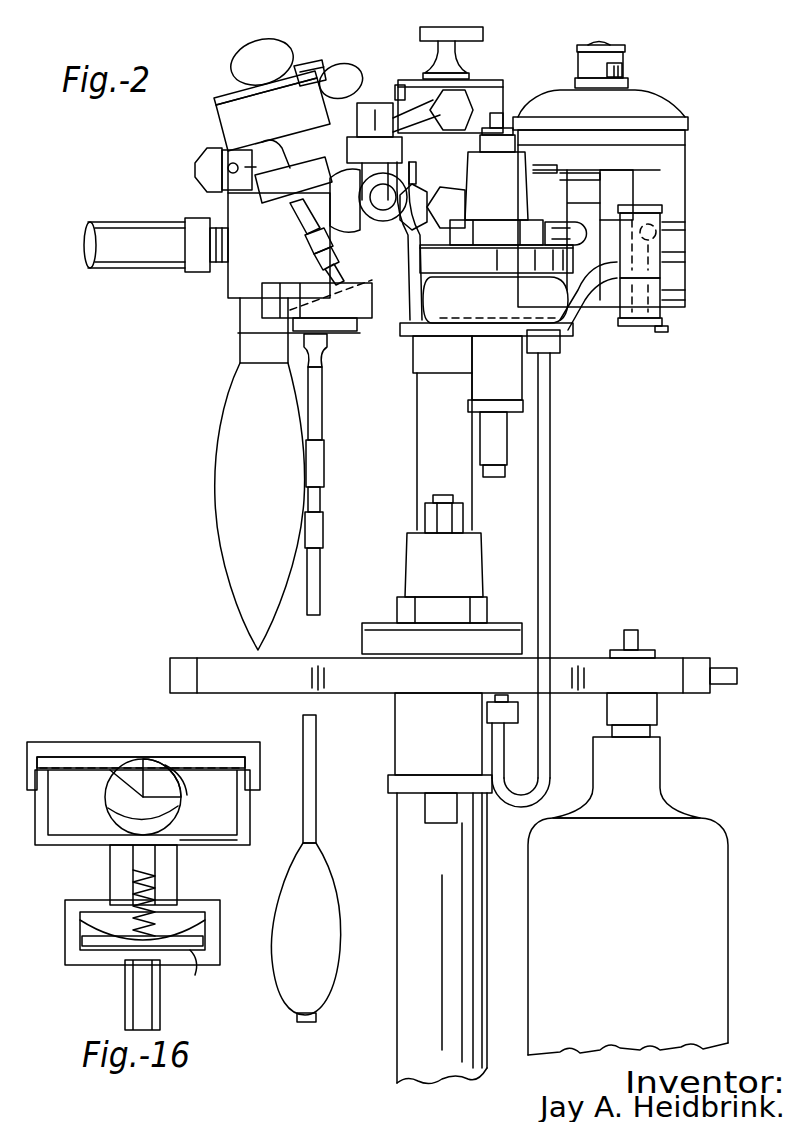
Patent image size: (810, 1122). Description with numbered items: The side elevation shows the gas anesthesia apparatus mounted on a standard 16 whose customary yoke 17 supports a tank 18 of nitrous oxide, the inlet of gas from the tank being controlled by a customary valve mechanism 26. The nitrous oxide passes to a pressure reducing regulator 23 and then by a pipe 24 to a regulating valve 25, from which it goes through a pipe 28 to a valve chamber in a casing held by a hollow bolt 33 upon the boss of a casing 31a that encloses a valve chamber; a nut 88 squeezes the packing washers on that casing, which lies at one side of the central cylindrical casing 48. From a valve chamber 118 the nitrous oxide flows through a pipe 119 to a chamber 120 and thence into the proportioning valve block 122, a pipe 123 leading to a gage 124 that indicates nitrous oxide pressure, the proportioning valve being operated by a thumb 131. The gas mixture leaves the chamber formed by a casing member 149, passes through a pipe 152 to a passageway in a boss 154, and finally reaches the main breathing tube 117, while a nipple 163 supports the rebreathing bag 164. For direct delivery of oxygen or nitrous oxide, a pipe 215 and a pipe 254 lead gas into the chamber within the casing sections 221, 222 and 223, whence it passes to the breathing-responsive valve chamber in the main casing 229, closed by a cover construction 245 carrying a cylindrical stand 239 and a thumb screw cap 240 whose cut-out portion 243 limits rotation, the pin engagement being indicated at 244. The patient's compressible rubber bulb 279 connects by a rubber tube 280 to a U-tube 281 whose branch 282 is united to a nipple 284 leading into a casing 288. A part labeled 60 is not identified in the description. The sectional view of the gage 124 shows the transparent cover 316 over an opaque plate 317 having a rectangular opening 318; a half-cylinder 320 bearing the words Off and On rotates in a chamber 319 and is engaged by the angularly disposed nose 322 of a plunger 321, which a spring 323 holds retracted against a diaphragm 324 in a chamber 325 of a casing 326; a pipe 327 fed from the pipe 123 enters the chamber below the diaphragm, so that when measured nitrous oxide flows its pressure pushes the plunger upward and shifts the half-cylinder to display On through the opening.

In FIG. 2, the standard 16 is at (417, 448).
In FIG. 2, the yoke 17 is at (565, 665).
In FIG. 2, the tank of nitrous oxide 18 is at (701, 834).
In FIG. 2, the pressure reducing regulator 23 is at (481, 637).
In FIG. 2, the pipe 24 is at (552, 474).
In FIG. 2, the regulating valve 25 is at (553, 308).
In FIG. 2, the valve mechanism 26 is at (639, 647).
In FIG. 2, the pipe 28 is at (422, 258).
In FIG. 2, the bolt 33 is at (433, 203).
In FIG. 2, the central cylindrical casing 48 is at (243, 281).
In FIG. 2, the handle 60 is at (281, 61).
In FIG. 2, the nut 88 is at (314, 246).
In FIG. 2, the casing 31a is at (312, 231).
In FIG. 2, the main breathing tube 117 is at (214, 273).
In FIG. 2, the valve chamber 118 is at (374, 102).
In FIG. 2, the pipe 119 is at (400, 83).
In FIG. 2, the chamber 120 is at (466, 101).
In FIG. 2, the proportioning valve block 122 is at (500, 91).
In FIG. 2, the pipe 123 is at (413, 172).
In FIG. 2, the gage 124 is at (226, 131).
In FIG. 16, the gage 124 is at (253, 812).
In FIG. 2, the thumb 131 is at (484, 33).
In FIG. 2, the casing member 149 is at (443, 190).
In FIG. 2, the pipe 152 is at (557, 221).
In FIG. 2, the boss 154 is at (590, 206).
In FIG. 2, the nipple 163 is at (240, 307).
In FIG. 2, the rebreathing bag 164 is at (234, 427).
In FIG. 2, the pipe 215 is at (587, 327).
In FIG. 2, the casing section 221 is at (684, 232).
In FIG. 2, the casing section 222 is at (682, 267).
In FIG. 2, the lower casing section 223 is at (684, 293).
In FIG. 2, the main casing 229 is at (688, 184).
In FIG. 2, the cylindrical stand 239 is at (631, 82).
In FIG. 2, the cap 240 is at (624, 49).
In FIG. 2, the cut-out portion 243 is at (625, 65).
In FIG. 2, the pin engagement position 244 is at (626, 72).
In FIG. 2, the main cap or cover construction 245 is at (662, 105).
In FIG. 2, the pipe 254 is at (587, 282).
In FIG. 2, the compressible rubber bulb 279 is at (323, 886).
In FIG. 2, the rubber tube 280 is at (313, 814).
In FIG. 2, the U-tube 281 is at (323, 496).
In FIG. 2, the branch 282 is at (322, 425).
In FIG. 2, the nipple 284 is at (327, 343).
In FIG. 2, the casing 288 is at (288, 334).
In FIG. 2, the transparent cover 316 is at (243, 96).
In FIG. 16, the transparent cover 316 is at (207, 742).
In FIG. 16, the opaque plate 317 is at (70, 766).
In FIG. 16, the rectangular opening 318 is at (190, 773).
In FIG. 16, the chamber 319 is at (208, 830).
In FIG. 16, the half-cylinder 320 is at (118, 778).
In FIG. 16, the plunger 321 is at (112, 856).
In FIG. 16, the angularly disposed nose 322 is at (128, 801).
In FIG. 16, the spring 323 is at (167, 892).
In FIG. 16, the diaphragm 324 is at (188, 958).
In FIG. 16, the chamber 325 is at (102, 944).
In FIG. 2, the casing 326 is at (236, 197).
In FIG. 16, the casing 326 is at (77, 903).
In FIG. 2, the pipe 327 is at (298, 210).
In FIG. 16, the pipe 327 is at (137, 996).